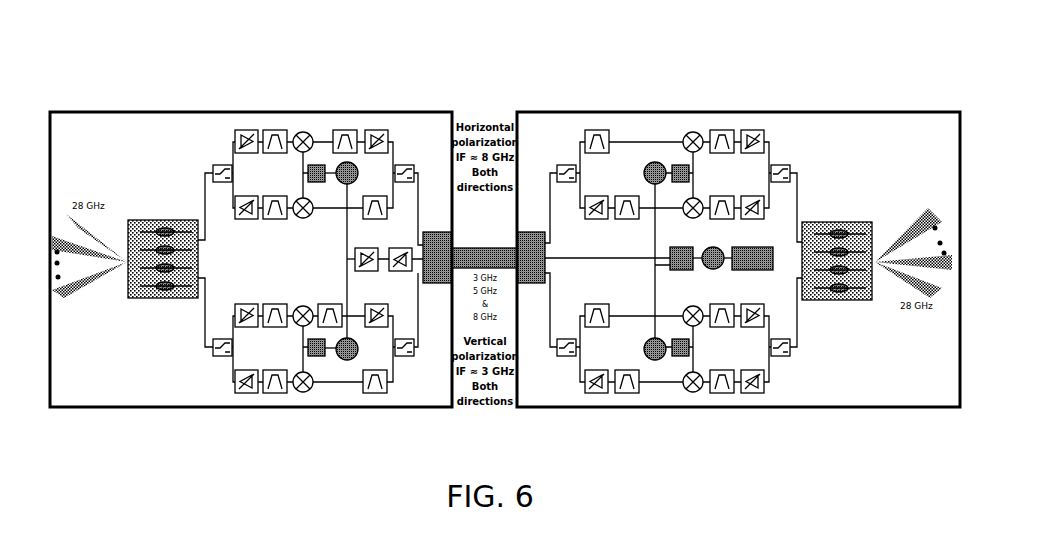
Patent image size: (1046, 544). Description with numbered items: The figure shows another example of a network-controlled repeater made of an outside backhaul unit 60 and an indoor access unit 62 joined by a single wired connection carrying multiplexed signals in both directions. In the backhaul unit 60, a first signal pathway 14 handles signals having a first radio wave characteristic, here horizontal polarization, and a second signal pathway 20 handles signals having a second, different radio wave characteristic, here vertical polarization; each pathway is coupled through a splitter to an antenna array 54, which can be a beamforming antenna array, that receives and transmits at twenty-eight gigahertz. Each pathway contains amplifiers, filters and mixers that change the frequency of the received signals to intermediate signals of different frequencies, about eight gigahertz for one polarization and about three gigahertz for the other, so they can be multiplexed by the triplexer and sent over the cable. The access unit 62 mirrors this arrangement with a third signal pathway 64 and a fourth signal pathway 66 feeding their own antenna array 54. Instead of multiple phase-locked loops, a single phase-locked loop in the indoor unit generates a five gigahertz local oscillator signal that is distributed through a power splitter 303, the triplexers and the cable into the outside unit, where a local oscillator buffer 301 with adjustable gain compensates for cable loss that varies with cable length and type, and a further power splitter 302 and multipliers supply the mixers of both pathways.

The backhaul unit 60 is at (227, 110).
The access unit 62 is at (713, 111).
The first signal pathway 14 is at (268, 234).
The second signal pathway 20 is at (183, 337).
The antenna array 54 is at (170, 220).
The third signal pathway 64 is at (719, 234).
The fourth signal pathway 66 is at (814, 365).
The LO buffer 301 is at (400, 255).
The power splitter 302 is at (360, 259).
The power splitter 303 is at (681, 269).